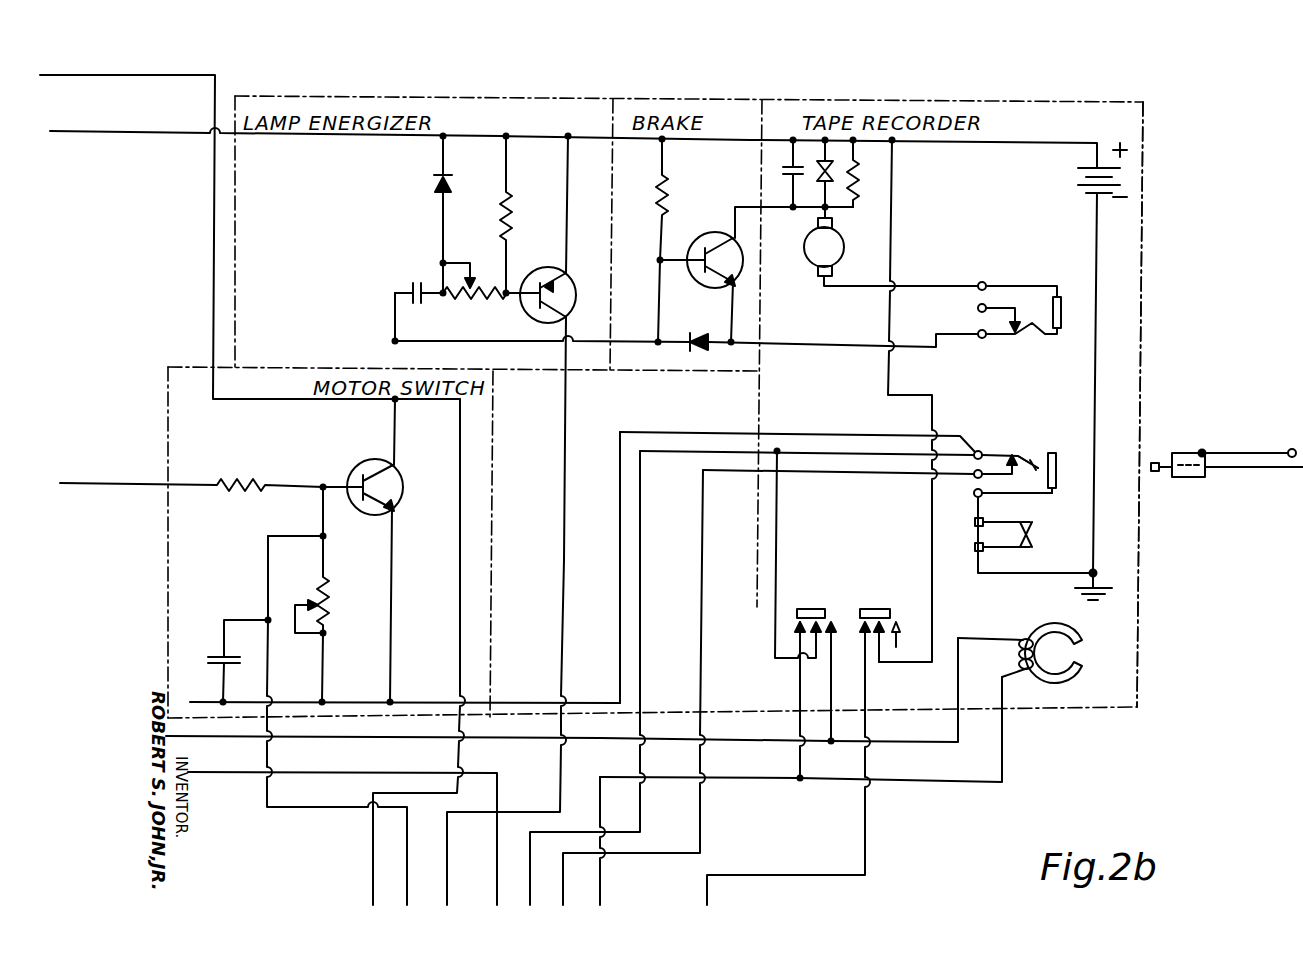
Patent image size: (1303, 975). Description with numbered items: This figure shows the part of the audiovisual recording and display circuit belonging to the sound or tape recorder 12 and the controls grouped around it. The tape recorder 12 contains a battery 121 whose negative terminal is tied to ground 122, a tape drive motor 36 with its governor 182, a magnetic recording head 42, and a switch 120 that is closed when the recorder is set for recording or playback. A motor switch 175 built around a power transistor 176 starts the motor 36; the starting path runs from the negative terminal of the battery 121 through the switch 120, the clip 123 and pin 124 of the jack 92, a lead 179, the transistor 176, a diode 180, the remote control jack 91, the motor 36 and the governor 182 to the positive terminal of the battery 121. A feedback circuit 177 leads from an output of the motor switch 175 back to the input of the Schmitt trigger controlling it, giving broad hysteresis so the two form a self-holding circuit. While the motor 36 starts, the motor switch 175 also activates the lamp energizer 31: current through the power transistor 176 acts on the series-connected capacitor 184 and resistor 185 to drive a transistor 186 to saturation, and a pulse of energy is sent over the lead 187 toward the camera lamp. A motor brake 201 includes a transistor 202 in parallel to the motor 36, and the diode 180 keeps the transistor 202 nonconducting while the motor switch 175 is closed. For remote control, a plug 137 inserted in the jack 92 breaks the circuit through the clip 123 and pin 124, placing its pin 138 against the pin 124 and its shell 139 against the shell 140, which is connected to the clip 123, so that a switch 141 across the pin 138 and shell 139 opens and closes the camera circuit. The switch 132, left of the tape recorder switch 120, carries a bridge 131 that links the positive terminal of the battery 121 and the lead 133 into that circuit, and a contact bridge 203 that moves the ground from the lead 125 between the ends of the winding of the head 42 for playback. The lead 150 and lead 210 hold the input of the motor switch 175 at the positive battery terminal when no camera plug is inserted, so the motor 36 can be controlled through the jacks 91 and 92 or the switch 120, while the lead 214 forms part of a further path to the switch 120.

The feedback circuit 177 is at (107, 75).
The motor brake 201 is at (737, 113).
The battery 121 is at (1078, 170).
The governor 182 is at (830, 185).
The tape recorder motor 36 is at (844, 250).
The tape recorder 12 is at (985, 264).
The remote control jack 91 is at (1060, 282).
The capacitor 184 is at (412, 288).
The resistor 185 is at (480, 277).
The transistor 186 is at (592, 257).
The lamp energizer 31 is at (355, 338).
The transistor 202 is at (740, 288).
The diode 180 is at (700, 351).
The lead 133 is at (888, 390).
The lead 187 is at (560, 462).
The power transistor 176 is at (392, 505).
The motor switch 175 is at (440, 595).
The jack 92 is at (1012, 449).
The pin 124 is at (1040, 465).
The shell 140 is at (1060, 470).
The clip 123 is at (1010, 493).
The switch 120 is at (1030, 536).
The plug 137 is at (1206, 444).
The switch 141 is at (1294, 449).
The shell 139 is at (1195, 478).
The pin 138 is at (1155, 472).
The ground 122 is at (1100, 584).
The switch 132 is at (807, 678).
The contact bridge 203 is at (827, 583).
The bridge 131 is at (868, 583).
The magnetic recording head 42 is at (1050, 620).
The lead 125 is at (636, 638).
The lead 179 is at (548, 700).
The lead 150 is at (305, 772).
The lead 210 is at (340, 808).
The lead 214 is at (700, 815).